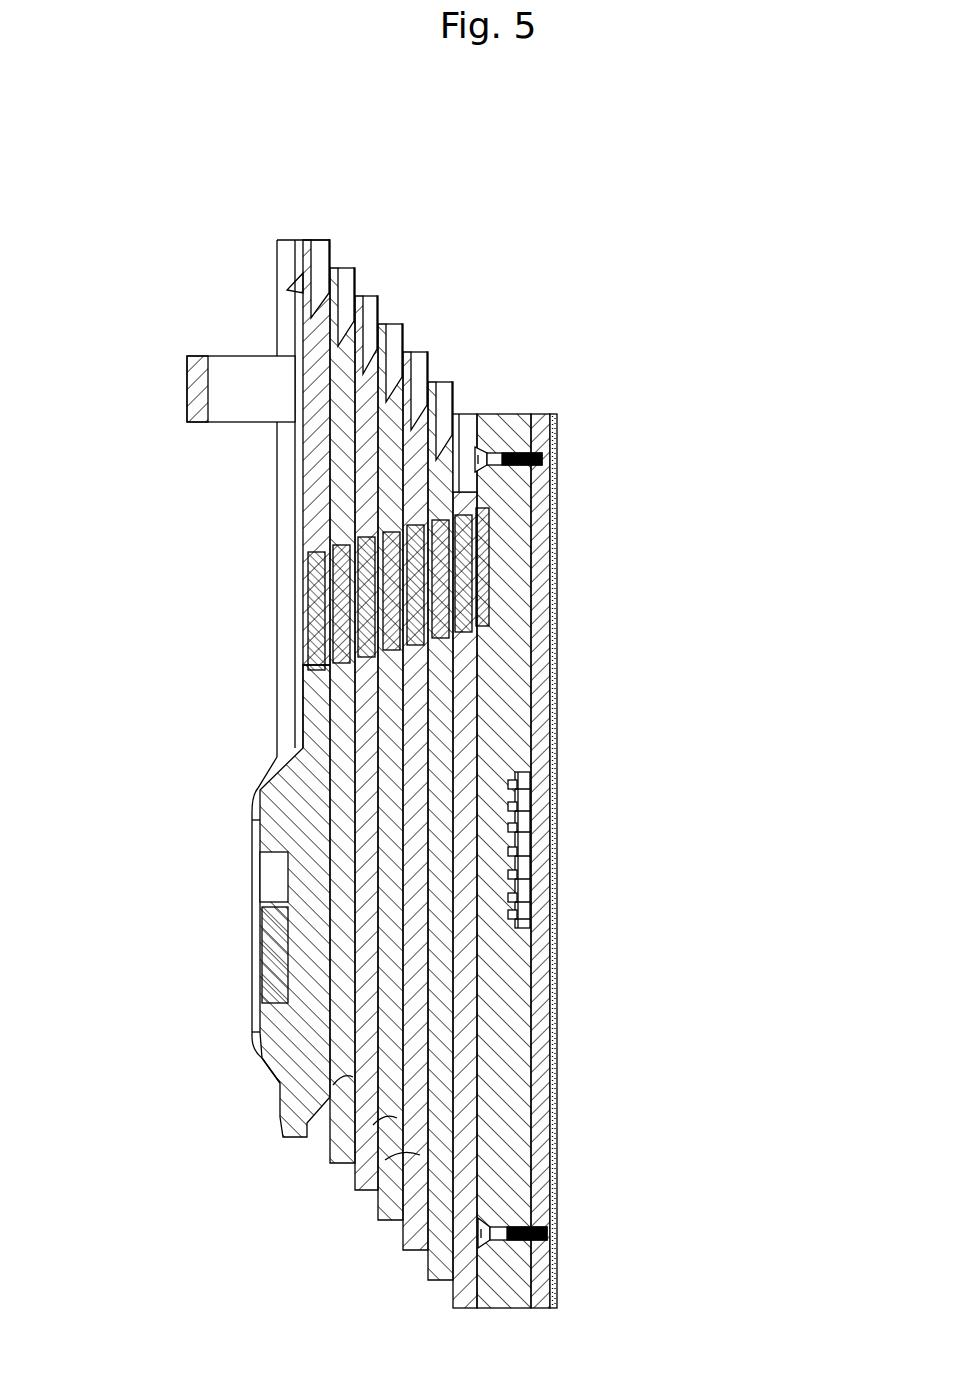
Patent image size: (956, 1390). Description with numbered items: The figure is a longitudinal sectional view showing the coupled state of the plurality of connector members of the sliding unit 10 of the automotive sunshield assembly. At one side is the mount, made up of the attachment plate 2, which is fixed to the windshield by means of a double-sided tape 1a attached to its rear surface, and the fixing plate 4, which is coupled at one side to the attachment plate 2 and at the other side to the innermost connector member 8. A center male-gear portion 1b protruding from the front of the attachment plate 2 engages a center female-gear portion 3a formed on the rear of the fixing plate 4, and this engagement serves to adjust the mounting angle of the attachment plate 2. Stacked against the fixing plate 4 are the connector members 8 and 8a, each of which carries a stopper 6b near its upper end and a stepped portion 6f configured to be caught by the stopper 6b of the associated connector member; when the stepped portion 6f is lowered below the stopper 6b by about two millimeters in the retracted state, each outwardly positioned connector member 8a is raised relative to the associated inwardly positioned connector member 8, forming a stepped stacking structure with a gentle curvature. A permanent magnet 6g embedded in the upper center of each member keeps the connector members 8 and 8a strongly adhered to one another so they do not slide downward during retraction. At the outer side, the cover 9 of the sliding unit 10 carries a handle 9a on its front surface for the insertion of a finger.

The double-sided tape 1a is at (557, 627).
The center male-gear portion 1b is at (525, 850).
The attachment plate 2 is at (548, 490).
The center female-gear portion 3a is at (603, 849).
The fixing plate 4 is at (510, 690).
The stopper 6b is at (298, 276).
The stepped portion 6f is at (322, 242).
The permanent magnet 6g is at (315, 560).
The connector member 8 is at (447, 1222).
The connector member 8a is at (322, 1130).
The cover 9 is at (305, 695).
The handle 9a is at (195, 390).
The sliding unit 10 is at (313, 1308).